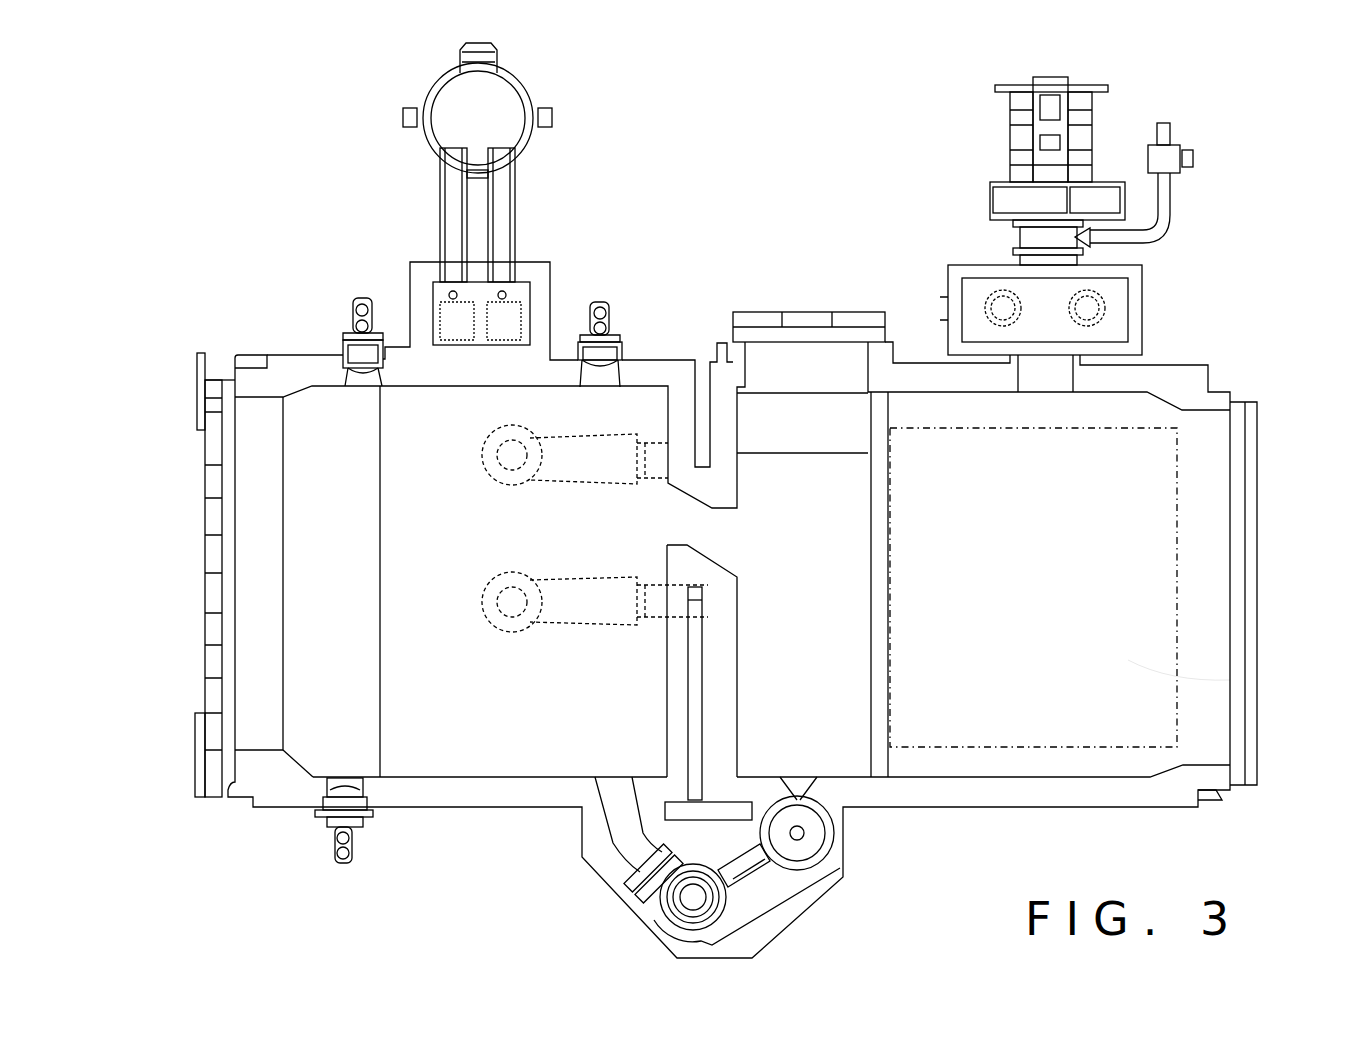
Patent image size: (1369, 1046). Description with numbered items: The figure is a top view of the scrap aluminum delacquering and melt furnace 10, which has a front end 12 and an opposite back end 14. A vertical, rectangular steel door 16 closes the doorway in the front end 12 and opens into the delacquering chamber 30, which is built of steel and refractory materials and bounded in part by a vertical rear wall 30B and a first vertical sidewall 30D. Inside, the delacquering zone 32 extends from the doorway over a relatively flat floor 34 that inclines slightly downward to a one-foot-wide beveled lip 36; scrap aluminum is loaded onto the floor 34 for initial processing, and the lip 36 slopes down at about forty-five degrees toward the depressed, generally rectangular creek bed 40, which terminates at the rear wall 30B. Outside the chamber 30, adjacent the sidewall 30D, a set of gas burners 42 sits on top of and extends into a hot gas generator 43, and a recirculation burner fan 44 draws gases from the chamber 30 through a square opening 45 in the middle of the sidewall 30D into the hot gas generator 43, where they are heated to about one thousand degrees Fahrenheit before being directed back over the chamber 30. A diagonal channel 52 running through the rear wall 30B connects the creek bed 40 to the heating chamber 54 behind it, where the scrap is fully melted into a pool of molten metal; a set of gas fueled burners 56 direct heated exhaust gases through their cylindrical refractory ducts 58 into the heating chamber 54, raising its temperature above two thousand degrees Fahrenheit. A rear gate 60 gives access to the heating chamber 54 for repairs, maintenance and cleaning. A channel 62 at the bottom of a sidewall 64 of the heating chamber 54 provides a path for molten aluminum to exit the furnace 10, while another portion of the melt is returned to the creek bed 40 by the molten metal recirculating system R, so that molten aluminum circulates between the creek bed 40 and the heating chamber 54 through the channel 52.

The scrap aluminum delacquering and melt furnace 10 is at (804, 186).
The front end 12 is at (1212, 187).
The back end 14 is at (337, 184).
The door 16 is at (1238, 548).
The delacquering chamber 30 is at (1258, 392).
The vertical rear wall 30B is at (737, 607).
The first vertical sidewall 30D is at (1135, 395).
The delacquering zone 32 is at (1123, 497).
The floor 34 is at (1128, 660).
The beveled lip 36 is at (880, 692).
The creek bed 40 is at (822, 728).
The gas burners 42 is at (995, 298).
The hot gas generator 43 is at (1142, 302).
The recirculation burner fan 44 is at (1112, 112).
The square opening 45 is at (1000, 412).
The diagonal channel 52 is at (607, 410).
The heating chamber 54 is at (686, 530).
The gas fueled burners 56 is at (347, 325).
The cylindrical refractory ducts 58 is at (362, 377).
The rear gate 60 is at (202, 570).
The channel 62 is at (475, 365).
The sidewall 64 is at (702, 370).
The molten metal recirculating system R is at (857, 881).